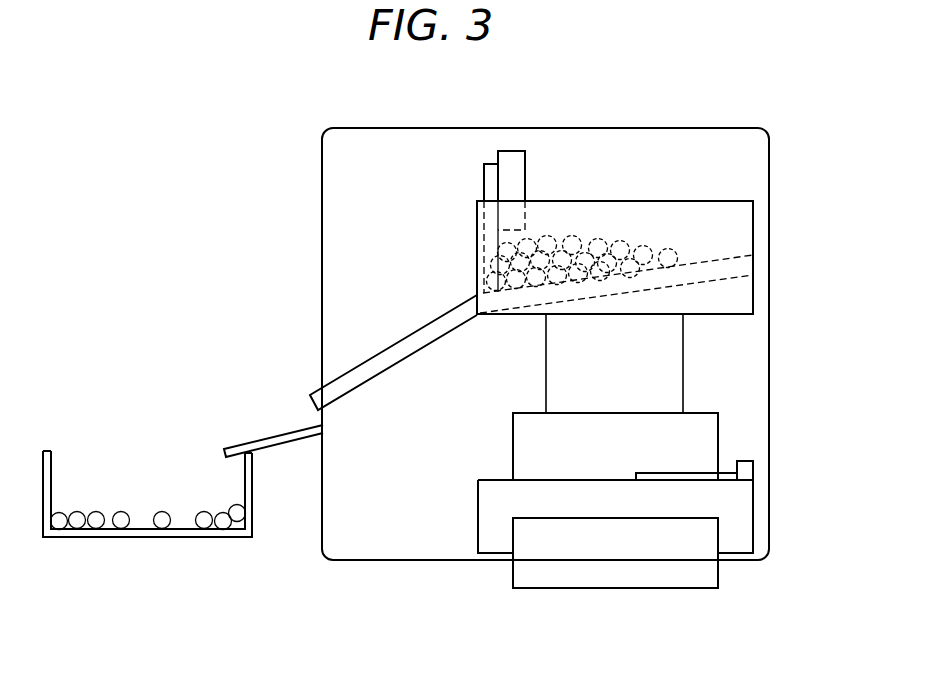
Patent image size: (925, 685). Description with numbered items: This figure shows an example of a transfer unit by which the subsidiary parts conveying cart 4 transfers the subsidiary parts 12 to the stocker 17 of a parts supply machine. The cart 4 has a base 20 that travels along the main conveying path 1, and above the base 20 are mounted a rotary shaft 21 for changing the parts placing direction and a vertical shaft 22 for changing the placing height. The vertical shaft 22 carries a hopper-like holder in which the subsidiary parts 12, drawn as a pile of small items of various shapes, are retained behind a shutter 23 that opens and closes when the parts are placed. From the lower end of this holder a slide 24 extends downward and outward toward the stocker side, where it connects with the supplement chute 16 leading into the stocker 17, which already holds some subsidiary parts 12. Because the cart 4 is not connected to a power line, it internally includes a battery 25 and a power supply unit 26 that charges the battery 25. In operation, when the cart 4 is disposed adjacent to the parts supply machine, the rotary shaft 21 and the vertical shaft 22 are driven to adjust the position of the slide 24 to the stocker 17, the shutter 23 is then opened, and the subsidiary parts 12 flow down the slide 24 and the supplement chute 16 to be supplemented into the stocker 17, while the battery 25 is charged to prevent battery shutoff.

The main conveying path 1 is at (655, 577).
The subsidiary parts conveying cart 4 is at (605, 128).
The subsidiary parts 12 is at (620, 250).
The supplement chute 16 is at (278, 438).
The stocker 17 is at (156, 478).
The base 20 is at (745, 532).
The rotary shaft 21 is at (707, 427).
The vertical shaft 22 is at (548, 365).
The shutter 23 is at (485, 251).
The slide 24 is at (372, 377).
The battery 25 is at (716, 480).
The power supply unit 26 is at (753, 465).